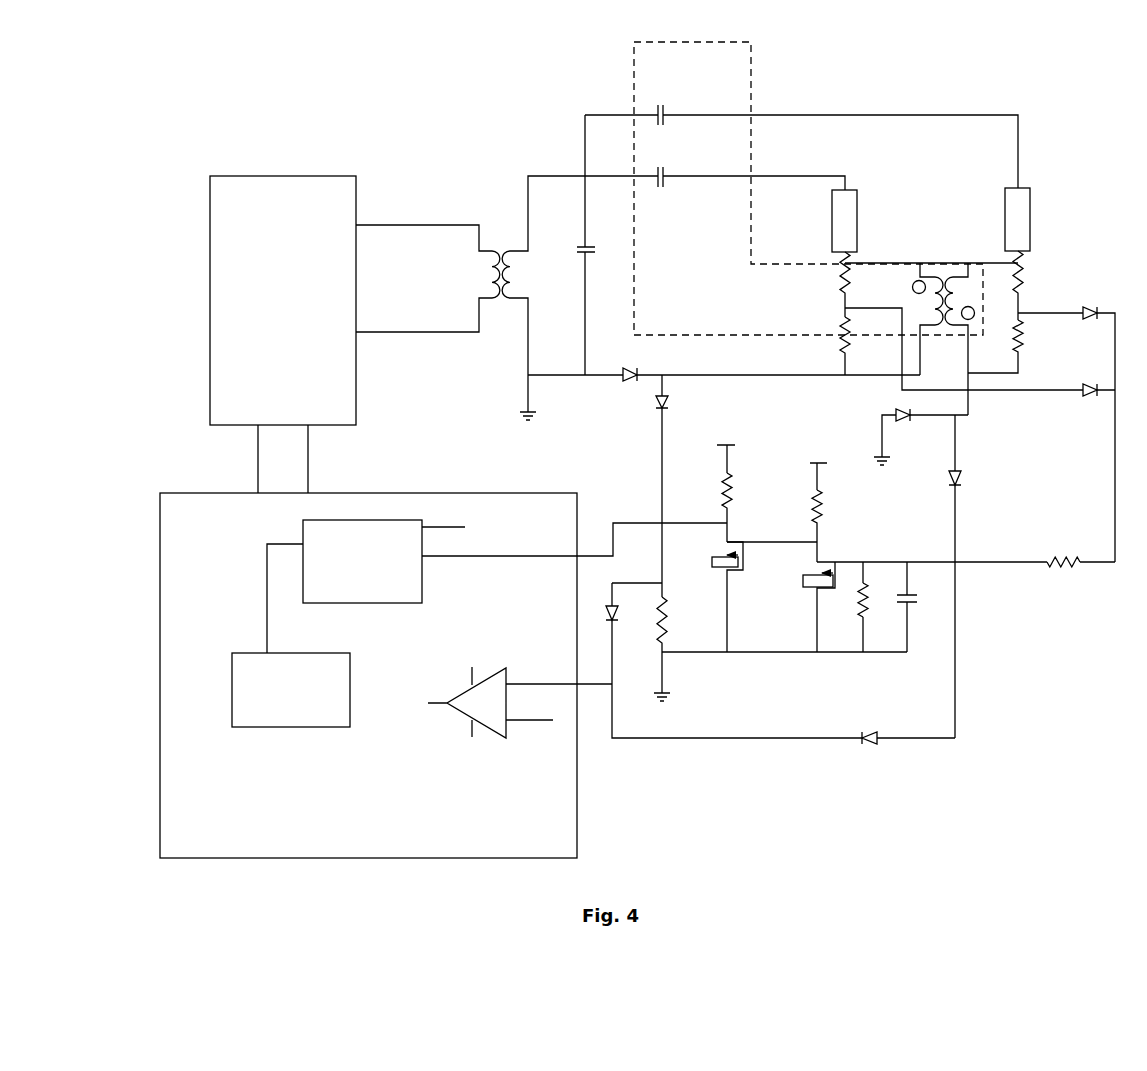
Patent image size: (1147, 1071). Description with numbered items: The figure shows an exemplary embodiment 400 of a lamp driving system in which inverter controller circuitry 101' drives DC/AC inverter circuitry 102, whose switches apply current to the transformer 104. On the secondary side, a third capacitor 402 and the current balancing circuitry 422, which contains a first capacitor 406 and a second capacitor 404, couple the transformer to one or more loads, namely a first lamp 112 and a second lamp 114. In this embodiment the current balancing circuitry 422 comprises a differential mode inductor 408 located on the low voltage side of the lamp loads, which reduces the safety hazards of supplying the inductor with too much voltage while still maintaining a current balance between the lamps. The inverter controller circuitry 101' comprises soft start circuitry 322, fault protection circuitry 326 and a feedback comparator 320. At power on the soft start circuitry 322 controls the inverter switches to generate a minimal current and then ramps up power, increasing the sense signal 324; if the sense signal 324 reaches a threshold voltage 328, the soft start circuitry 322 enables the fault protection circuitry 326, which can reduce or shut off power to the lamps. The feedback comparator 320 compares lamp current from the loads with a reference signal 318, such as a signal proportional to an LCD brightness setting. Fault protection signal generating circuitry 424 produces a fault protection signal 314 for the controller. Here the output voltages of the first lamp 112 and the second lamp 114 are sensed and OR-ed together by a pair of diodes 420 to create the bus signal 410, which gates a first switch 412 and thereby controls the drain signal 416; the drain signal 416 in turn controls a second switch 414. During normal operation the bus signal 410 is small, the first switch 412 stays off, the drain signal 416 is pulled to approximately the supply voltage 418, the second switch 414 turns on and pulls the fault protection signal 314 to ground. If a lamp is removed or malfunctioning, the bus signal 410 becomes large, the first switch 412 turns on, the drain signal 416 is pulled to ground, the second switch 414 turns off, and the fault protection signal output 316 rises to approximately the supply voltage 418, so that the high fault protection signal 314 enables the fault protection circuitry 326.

The exemplary embodiment 400 is at (412, 112).
The DC/AC inverter circuitry 102 is at (266, 176).
The transformer T1 104 is at (468, 193).
The capacitor C1 406 is at (673, 90).
The capacitor C2 404 is at (667, 158).
The capacitor C3 402 is at (602, 257).
The current balancing circuitry 422 is at (750, 155).
The lamp 112 is at (864, 200).
The lamp 114 is at (1040, 200).
The differential mode inductor 408 is at (944, 282).
The diodes D1 and D2 420 is at (1082, 333).
The signal VB 410 is at (1103, 502).
The fault protection signal generating circuitry 424 is at (808, 543).
The switch Q1 412 is at (856, 604).
The switch Q2 414 is at (708, 592).
The VDD 418 is at (743, 480).
The signal VD 416 is at (783, 525).
The fault protection signal FP 314 is at (574, 486).
The fault protection signal 316 is at (780, 663).
The inverter controller circuitry 101' is at (386, 643).
The fault protection circuitry 326 is at (362, 548).
The threshold voltage VT 328 is at (488, 528).
The signal VS 324 is at (255, 598).
The soft start circuitry 322 is at (291, 706).
The feedback comparator 320 is at (511, 700).
The reference signal ADJ 318 is at (531, 748).